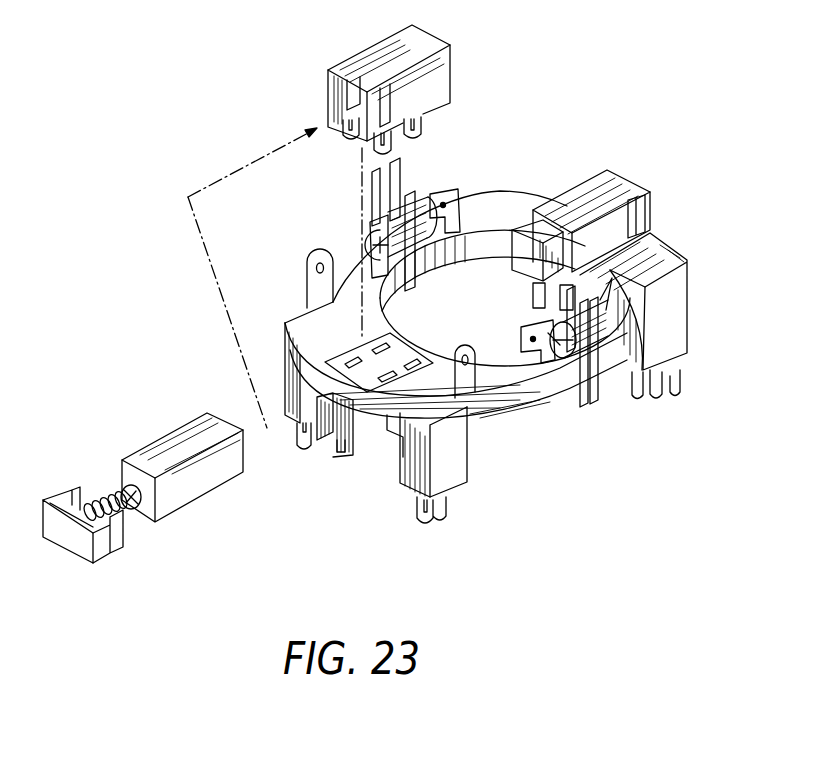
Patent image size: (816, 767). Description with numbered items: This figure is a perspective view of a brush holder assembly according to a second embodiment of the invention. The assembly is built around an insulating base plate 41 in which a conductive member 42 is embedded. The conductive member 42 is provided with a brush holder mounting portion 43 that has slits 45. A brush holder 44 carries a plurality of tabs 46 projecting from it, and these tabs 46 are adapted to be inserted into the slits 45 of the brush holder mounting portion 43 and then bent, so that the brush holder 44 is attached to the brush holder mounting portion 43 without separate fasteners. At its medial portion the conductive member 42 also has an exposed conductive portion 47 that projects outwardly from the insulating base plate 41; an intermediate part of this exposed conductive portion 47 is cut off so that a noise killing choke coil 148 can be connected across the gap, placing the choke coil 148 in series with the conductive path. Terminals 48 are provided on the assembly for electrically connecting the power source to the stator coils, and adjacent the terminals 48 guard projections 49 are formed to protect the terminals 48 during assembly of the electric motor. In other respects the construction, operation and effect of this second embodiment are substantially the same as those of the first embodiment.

The insulating base plate 41 is at (497, 217).
The conductive member 42 is at (462, 196).
The brush holder mounting portion 43 is at (352, 372).
The brush holder 44 is at (373, 55).
The slits 45 is at (375, 340).
The tabs 46 is at (357, 137).
The exposed conductive portion 47 is at (458, 205).
The terminals 48 is at (305, 452).
The guard projections 49 is at (340, 458).
The noise killing choke coil 148 is at (562, 362).